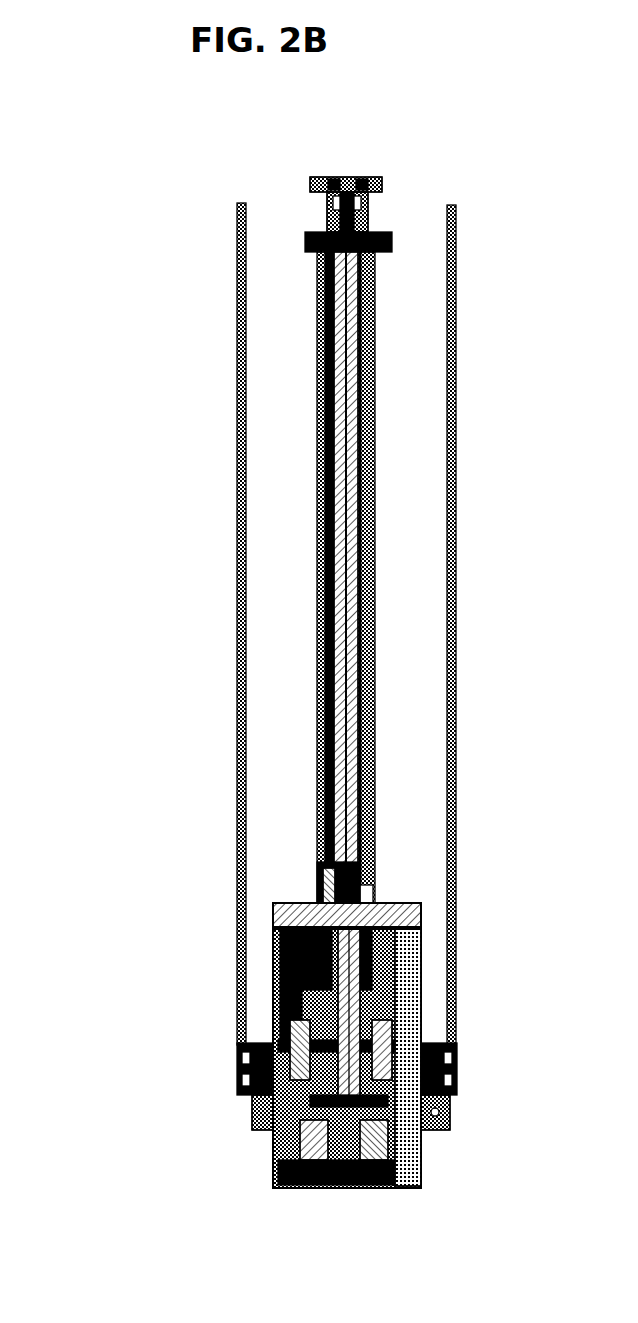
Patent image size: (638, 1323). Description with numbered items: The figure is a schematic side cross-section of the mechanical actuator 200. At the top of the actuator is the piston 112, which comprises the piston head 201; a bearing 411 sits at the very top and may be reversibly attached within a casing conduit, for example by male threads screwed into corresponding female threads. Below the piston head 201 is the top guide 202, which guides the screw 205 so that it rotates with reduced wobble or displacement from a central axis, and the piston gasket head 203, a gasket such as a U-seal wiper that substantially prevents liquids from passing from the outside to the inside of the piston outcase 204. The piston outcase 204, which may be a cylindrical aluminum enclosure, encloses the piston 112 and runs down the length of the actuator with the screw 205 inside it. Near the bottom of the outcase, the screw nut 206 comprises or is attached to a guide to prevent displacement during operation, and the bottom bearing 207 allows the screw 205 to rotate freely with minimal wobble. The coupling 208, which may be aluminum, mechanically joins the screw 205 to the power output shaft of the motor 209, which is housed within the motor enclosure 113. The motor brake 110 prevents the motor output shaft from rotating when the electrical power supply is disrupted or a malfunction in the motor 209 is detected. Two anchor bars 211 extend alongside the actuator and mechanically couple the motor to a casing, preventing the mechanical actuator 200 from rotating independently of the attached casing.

The mechanical actuator 200 is at (172, 125).
The bearing 411 is at (341, 175).
The piston 112 is at (368, 214).
The piston head 201 is at (310, 180).
The top guide 202 is at (330, 205).
The piston gasket head 203 is at (306, 243).
The anchor bars 211 is at (441, 437).
The piston outcase 204 is at (318, 650).
The screw 205 is at (333, 763).
The screw nut 206 is at (318, 878).
The bottom bearing 207 is at (318, 930).
The coupling 208 is at (285, 965).
The motor 209 is at (258, 1105).
The motor enclosure 113 is at (252, 1137).
The motor brake 110 is at (273, 1168).